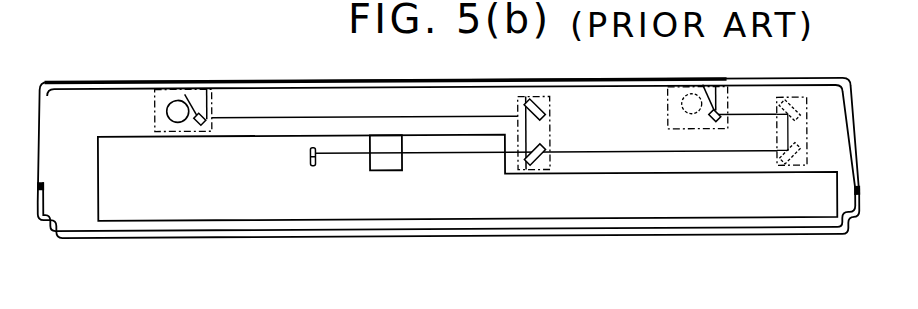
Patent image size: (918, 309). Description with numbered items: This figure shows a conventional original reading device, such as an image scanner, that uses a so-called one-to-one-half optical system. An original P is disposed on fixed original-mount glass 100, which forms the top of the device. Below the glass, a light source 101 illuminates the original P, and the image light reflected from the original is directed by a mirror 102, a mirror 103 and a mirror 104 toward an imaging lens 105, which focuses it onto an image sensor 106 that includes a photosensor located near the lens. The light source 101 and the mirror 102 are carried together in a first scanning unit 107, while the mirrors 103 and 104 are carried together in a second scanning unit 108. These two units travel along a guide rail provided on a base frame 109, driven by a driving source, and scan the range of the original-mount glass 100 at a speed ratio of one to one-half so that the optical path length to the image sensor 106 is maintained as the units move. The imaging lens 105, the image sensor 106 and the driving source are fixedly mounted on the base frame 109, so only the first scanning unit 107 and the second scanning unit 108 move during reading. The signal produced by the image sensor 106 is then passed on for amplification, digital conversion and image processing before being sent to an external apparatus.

The original-mount glass 100 is at (730, 78).
The original P is at (396, 77).
The light source 101 is at (173, 107).
The mirror 102 is at (206, 126).
The mirror 103 is at (542, 97).
The mirror 104 is at (545, 150).
The imaging lens 105 is at (393, 170).
The image sensor 106 is at (314, 165).
The first scanning unit 107 is at (148, 87).
The second scanning unit 108 is at (522, 92).
The base frame 109 is at (722, 207).